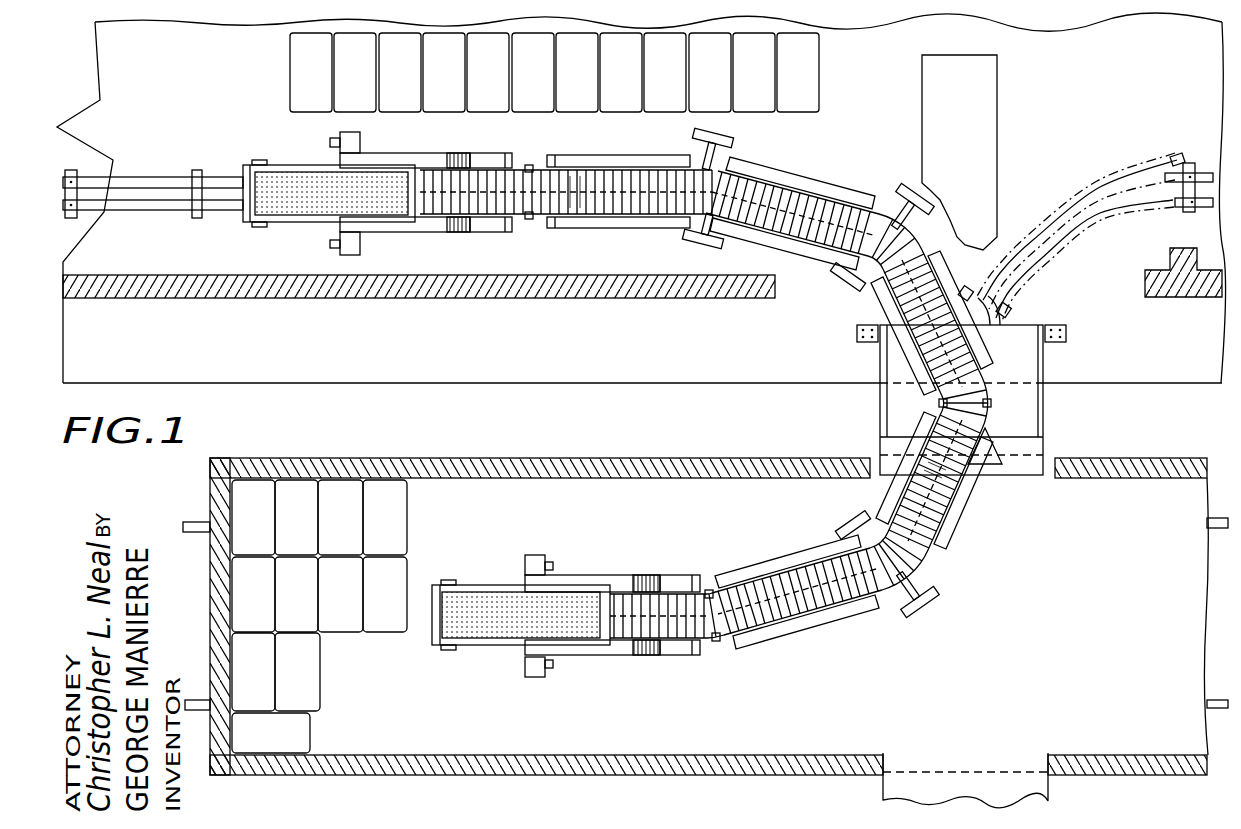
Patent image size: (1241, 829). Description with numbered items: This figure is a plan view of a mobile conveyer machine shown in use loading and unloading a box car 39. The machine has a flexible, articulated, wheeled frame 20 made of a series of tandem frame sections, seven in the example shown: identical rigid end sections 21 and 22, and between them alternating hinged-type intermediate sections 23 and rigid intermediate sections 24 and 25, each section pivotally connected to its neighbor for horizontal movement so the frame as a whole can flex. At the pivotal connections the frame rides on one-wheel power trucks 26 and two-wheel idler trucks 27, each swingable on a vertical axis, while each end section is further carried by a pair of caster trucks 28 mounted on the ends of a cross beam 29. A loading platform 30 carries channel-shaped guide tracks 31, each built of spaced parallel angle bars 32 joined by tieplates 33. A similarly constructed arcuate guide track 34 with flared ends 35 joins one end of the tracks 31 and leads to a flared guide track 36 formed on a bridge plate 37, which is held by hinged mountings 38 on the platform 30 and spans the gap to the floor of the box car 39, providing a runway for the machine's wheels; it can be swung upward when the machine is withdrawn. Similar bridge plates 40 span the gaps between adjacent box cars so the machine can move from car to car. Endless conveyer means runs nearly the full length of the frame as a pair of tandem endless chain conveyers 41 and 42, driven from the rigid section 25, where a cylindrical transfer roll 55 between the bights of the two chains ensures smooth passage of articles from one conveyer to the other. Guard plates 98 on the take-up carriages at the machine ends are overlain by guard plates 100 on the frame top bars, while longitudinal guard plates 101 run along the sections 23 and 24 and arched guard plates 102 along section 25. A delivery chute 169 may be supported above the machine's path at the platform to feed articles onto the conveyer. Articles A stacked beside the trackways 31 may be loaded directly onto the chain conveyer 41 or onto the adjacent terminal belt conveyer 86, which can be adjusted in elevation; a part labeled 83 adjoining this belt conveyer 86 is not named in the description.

The articles A is at (312, 75).
The flexible articulated wheeled frame 20 is at (420, 236).
The end section 21 is at (447, 155).
The end section 22 is at (578, 652).
The intermediate section of hinged type 23 is at (615, 157).
The intermediate section of rigid type 24 is at (837, 197).
The intermediate section of rigid type 25 is at (945, 535).
The power trucks 26 is at (530, 165).
The idler trucks 27 is at (728, 137).
The caster trucks 28 is at (330, 143).
The cross beam 29 is at (362, 140).
The loading platform 30 is at (553, 385).
The channel-shaped guide tracks 31 is at (150, 162).
The angle bars 32 is at (165, 177).
The tieplates 33 is at (196, 218).
The arcuate guide track 34 is at (1081, 192).
The flared ends 35 is at (995, 300).
The flared guide track 36 is at (990, 335).
The bridge plate 37 is at (1030, 404).
The hinged mountings 38 is at (1062, 326).
The box car 39 is at (690, 458).
The bridge plates 40 is at (1035, 788).
The endless chain conveyer 41 is at (607, 200).
The endless chain conveyer 42 is at (803, 600).
The cylindrical transfer roll 55 is at (960, 489).
The ram housing 83 is at (292, 222).
The terminal belt conveyer 86 is at (292, 178).
The guard plates 98 is at (432, 226).
The guard plates 100 is at (497, 228).
The guard plates 101 is at (572, 228).
The guard plates 102 is at (900, 492).
The delivery chute 169 is at (983, 127).